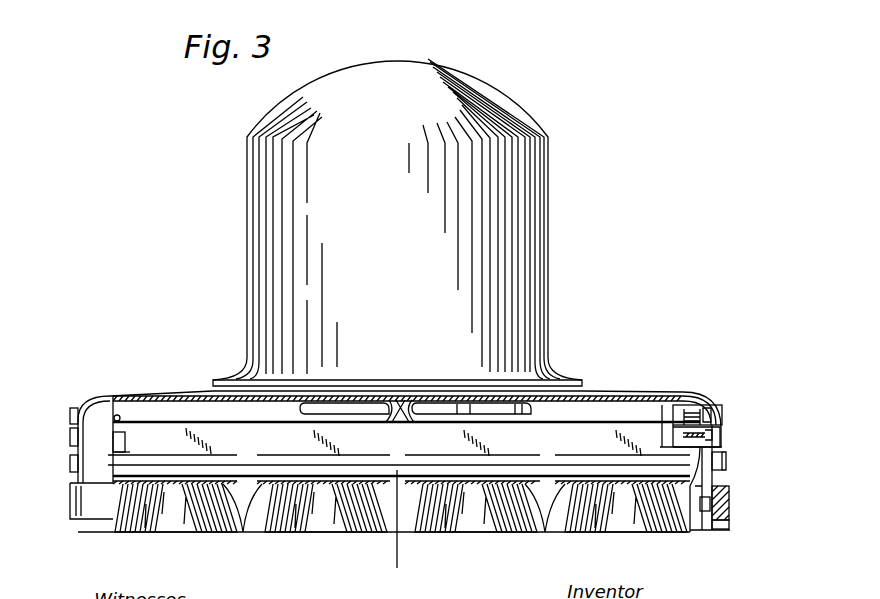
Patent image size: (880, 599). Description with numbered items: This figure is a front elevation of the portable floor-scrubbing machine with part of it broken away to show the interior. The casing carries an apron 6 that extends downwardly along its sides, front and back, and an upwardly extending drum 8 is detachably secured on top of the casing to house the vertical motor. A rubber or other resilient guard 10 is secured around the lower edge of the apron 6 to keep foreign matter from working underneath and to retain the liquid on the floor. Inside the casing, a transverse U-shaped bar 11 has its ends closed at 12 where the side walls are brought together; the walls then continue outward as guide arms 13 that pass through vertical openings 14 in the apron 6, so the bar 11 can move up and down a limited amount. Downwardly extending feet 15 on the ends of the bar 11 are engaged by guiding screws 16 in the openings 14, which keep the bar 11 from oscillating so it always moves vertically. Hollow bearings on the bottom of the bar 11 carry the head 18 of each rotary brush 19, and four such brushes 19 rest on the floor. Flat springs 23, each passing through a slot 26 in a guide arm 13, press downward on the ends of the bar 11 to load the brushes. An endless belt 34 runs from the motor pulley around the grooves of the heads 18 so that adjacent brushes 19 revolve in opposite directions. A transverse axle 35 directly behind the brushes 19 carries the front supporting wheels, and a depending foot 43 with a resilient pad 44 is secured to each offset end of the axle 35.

The apron 6 is at (92, 455).
The drum 8 is at (270, 221).
The resilient guard 10 is at (723, 522).
The U-shaped bar 11 is at (565, 440).
The closed ends of bar 12 is at (118, 437).
The guide arms 13 is at (72, 440).
The vertical openings 14 is at (723, 451).
The depending feet 15 is at (712, 518).
The guiding screws 16 is at (725, 461).
The head 18 is at (243, 486).
The rotary brush 19 is at (168, 523).
The flat spring 23 is at (686, 410).
The slot 26 is at (722, 418).
The endless belt 34 is at (384, 521).
The transverse axle 35 is at (690, 510).
The depending foot 43 is at (696, 509).
The resilient pad 44 is at (704, 532).